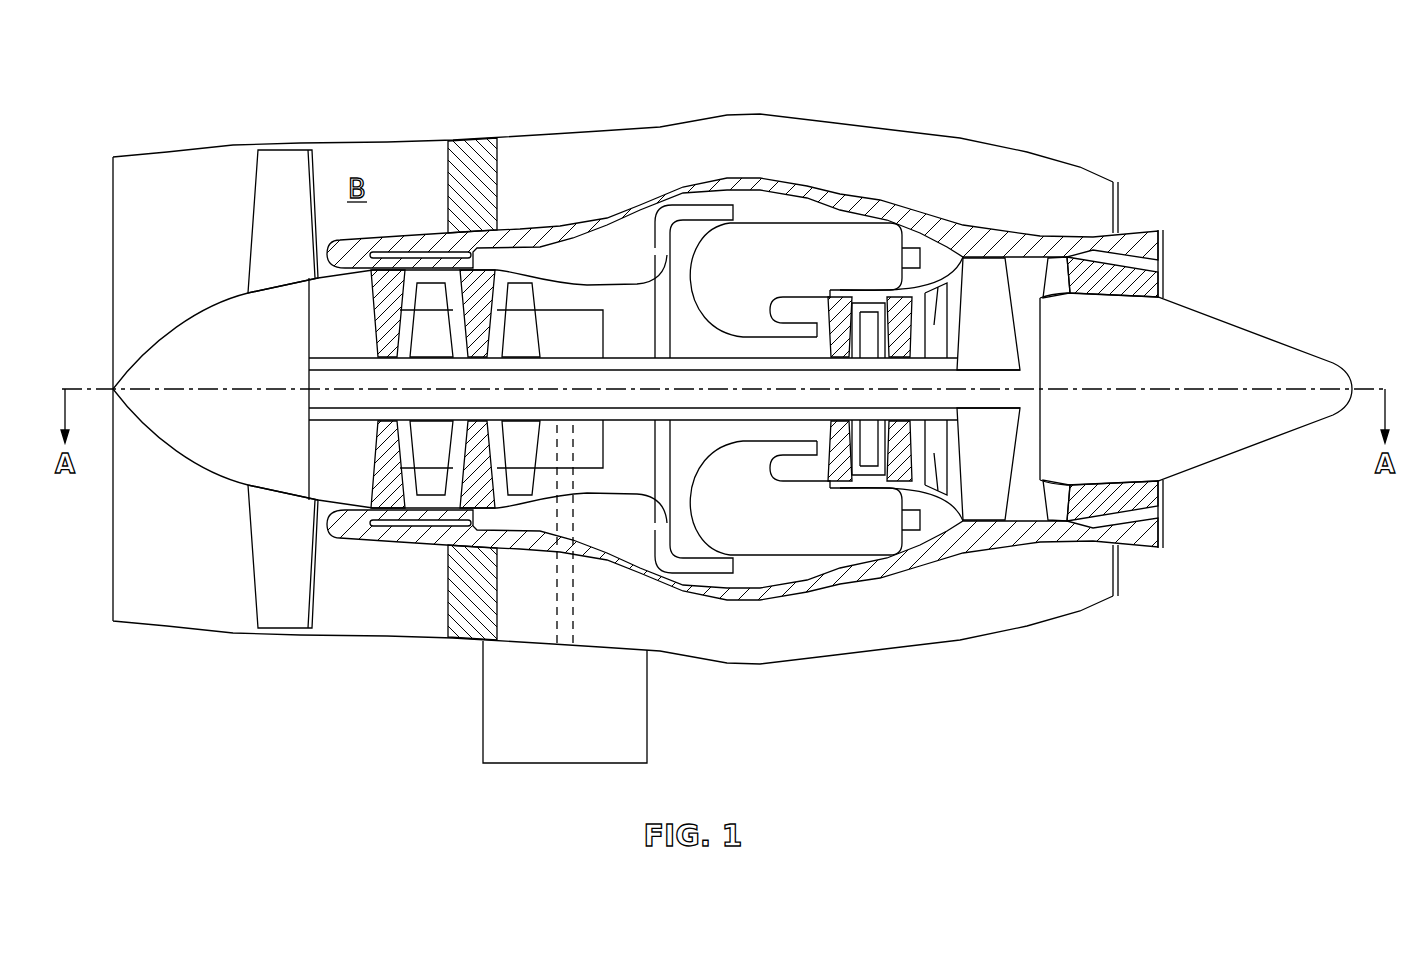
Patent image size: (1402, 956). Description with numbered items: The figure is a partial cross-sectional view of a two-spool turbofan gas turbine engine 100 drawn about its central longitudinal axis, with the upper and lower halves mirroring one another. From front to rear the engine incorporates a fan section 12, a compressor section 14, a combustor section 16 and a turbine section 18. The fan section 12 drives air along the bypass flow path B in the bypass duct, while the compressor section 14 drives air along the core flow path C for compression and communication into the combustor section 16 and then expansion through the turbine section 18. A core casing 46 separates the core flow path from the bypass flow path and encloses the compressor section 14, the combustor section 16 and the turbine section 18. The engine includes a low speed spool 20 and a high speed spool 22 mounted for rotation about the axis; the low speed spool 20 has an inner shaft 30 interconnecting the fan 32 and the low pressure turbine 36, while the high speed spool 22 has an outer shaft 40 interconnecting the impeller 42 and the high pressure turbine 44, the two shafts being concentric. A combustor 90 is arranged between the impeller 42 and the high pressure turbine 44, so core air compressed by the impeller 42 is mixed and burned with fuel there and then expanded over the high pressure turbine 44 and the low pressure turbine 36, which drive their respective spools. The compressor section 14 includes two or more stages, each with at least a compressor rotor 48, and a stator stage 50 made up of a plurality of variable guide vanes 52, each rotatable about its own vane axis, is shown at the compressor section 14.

The gas turbine engine 100 is at (104, 90).
The fan section 12 is at (259, 659).
The compressor section 14 is at (453, 659).
The combustor section 16 is at (785, 670).
The turbine section 18 is at (1036, 666).
The low speed spool 20 is at (915, 430).
The high speed spool 22 is at (760, 427).
The inner shaft 30 is at (846, 445).
The fan 32 is at (283, 158).
The low pressure turbine 36 is at (986, 274).
The outer shaft 40 is at (785, 252).
The impeller 42 is at (645, 330).
The high pressure turbine 44 is at (968, 268).
The core casing 46 is at (700, 340).
The compressor rotor 48 is at (430, 490).
The stator stage 50 is at (376, 300).
The variable guide vane 52 is at (470, 535).
The combustor 90 is at (775, 300).